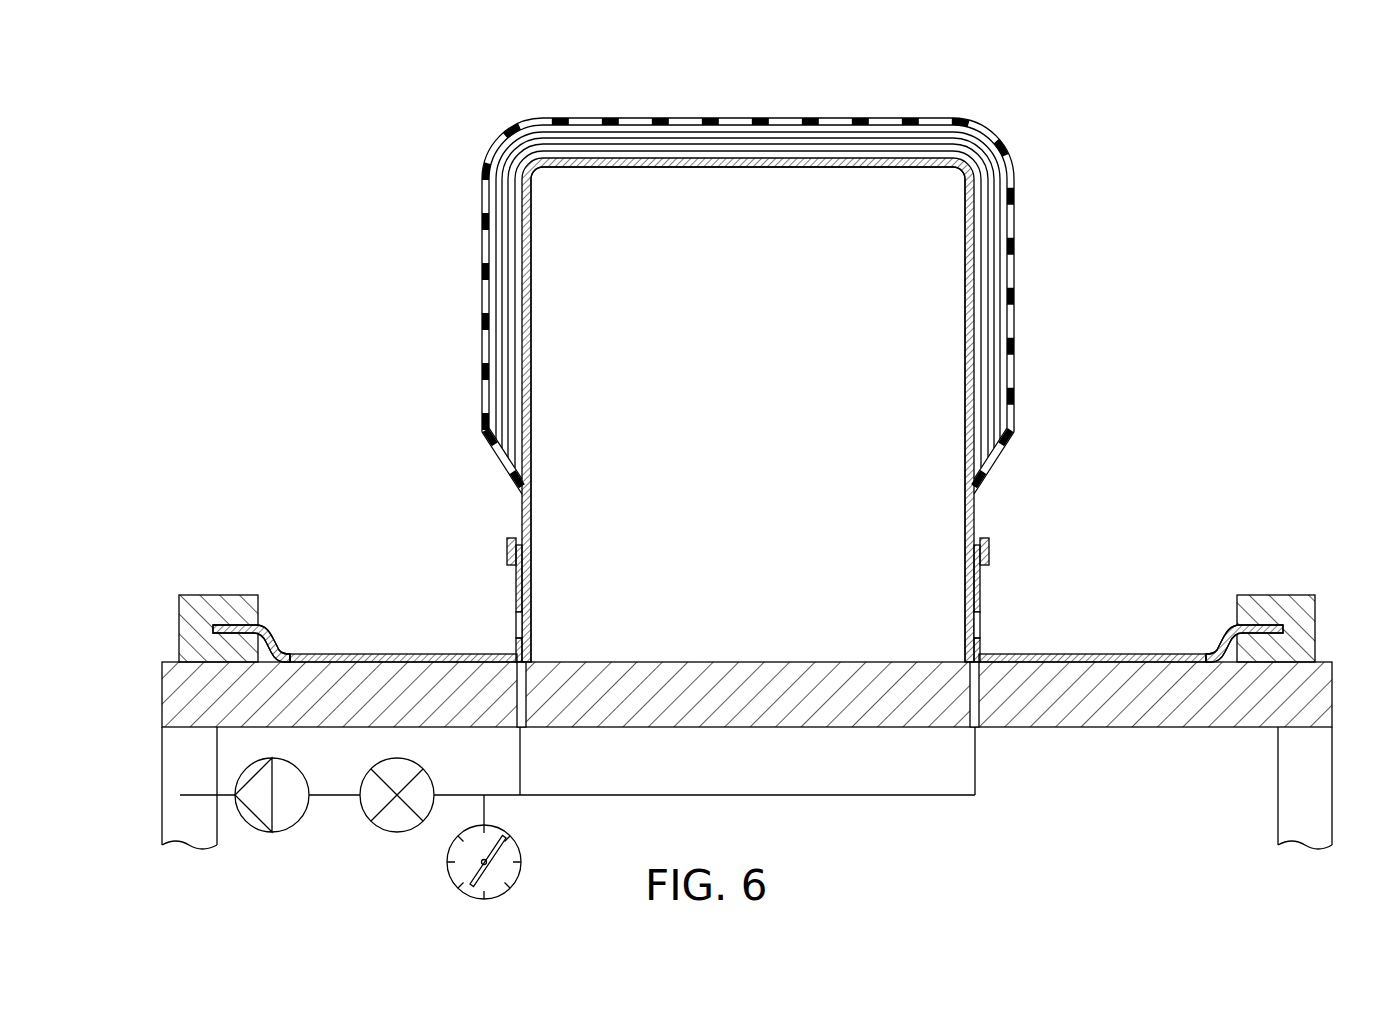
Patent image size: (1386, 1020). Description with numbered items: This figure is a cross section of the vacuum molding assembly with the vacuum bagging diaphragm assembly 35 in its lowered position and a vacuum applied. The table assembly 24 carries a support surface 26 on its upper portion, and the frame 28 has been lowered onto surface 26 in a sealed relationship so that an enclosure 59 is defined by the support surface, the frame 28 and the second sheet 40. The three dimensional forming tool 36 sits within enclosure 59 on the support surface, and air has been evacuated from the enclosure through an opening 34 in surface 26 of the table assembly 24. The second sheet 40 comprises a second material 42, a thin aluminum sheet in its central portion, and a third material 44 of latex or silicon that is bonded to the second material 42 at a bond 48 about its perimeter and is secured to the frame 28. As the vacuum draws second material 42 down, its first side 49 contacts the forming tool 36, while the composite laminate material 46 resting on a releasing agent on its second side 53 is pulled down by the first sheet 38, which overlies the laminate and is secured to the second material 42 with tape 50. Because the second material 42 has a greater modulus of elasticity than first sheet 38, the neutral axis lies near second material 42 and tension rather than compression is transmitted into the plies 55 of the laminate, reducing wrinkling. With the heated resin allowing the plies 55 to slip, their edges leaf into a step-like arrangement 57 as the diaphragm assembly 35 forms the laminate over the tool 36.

The table assembly 24 is at (231, 855).
The support surface 26 is at (440, 660).
The frame 28 is at (236, 597).
The opening 34 is at (538, 662).
The vacuum bagging diaphragm assembly 35 is at (908, 105).
The three dimensional forming tool 36 is at (918, 222).
The first sheet 38 is at (830, 116).
The second sheet 40 is at (624, 179).
The second material 42 is at (762, 166).
The third material 44 is at (368, 655).
The composite laminate material 46 is at (960, 134).
The bond 48 is at (516, 603).
The first side 49 is at (880, 168).
The tape 50 is at (507, 552).
The second side 53 is at (633, 152).
The plies 55 is at (522, 120).
The step-like arrangement 57 is at (485, 425).
The enclosure 59 is at (265, 650).